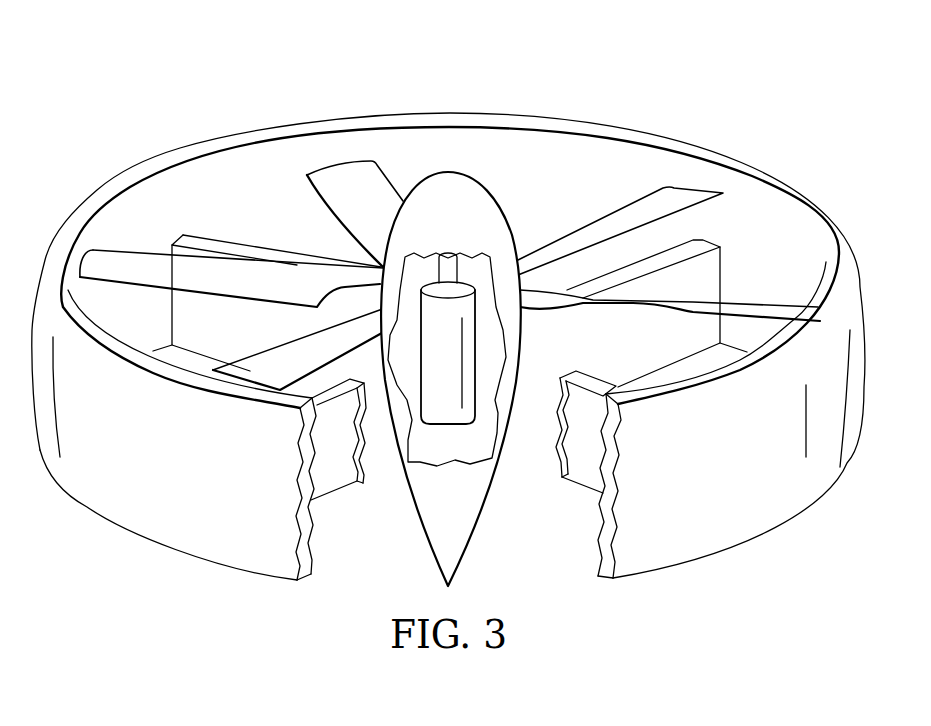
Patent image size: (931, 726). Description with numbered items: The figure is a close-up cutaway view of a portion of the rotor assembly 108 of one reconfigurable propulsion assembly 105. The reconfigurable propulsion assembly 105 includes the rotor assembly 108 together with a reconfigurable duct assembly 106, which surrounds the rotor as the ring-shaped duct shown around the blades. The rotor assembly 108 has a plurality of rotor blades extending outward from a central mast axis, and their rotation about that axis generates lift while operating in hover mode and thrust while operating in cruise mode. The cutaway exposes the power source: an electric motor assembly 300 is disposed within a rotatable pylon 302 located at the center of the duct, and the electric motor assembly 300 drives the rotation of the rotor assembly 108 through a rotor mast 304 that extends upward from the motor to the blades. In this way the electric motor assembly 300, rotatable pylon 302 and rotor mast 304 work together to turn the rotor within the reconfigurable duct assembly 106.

The reconfigurable propulsion assembly 105 is at (705, 95).
The reconfigurable duct assembly 106 is at (268, 119).
The rotor assembly 108 is at (442, 163).
The electric motor assembly 300 is at (437, 444).
The rotatable pylon 302 is at (475, 336).
The rotor mast 304 is at (460, 268).